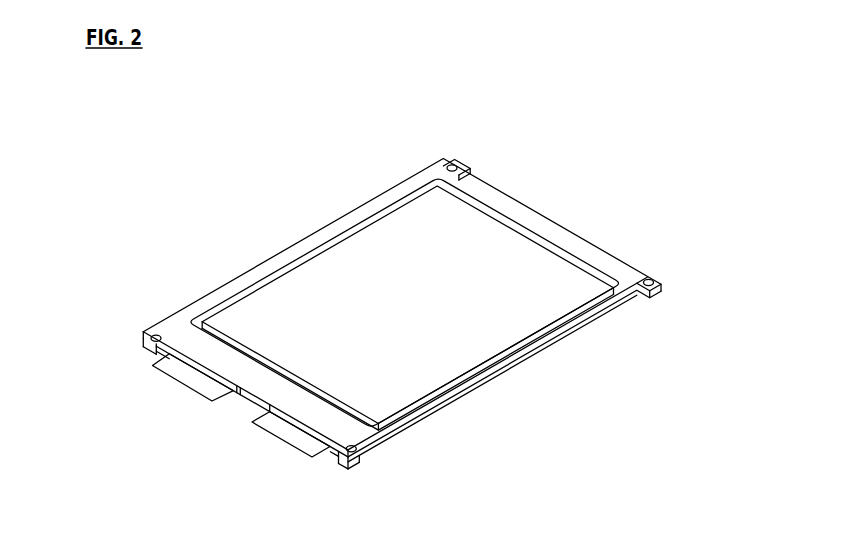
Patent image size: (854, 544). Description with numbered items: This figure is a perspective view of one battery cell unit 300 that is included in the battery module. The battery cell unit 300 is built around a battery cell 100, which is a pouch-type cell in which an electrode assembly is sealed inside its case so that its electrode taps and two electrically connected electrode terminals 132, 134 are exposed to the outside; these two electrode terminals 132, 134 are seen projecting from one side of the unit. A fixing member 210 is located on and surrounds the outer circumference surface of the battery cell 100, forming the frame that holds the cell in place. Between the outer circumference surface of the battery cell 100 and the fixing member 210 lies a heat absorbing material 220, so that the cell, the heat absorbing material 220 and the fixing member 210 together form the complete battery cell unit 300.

The battery cell unit 300 is at (157, 138).
The battery cell 100 is at (472, 222).
The fixing member 210 is at (550, 232).
The heat absorbing material 220 is at (603, 303).
The electrode terminal 132 is at (190, 378).
The electrode terminal 134 is at (287, 435).